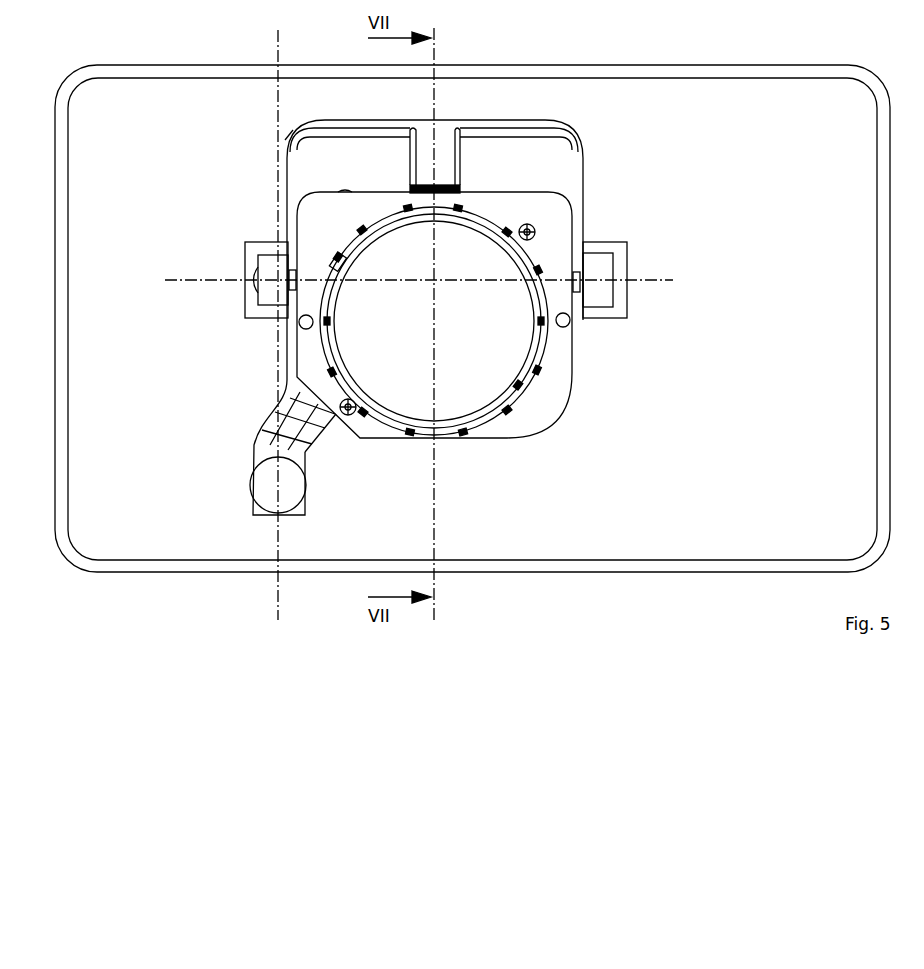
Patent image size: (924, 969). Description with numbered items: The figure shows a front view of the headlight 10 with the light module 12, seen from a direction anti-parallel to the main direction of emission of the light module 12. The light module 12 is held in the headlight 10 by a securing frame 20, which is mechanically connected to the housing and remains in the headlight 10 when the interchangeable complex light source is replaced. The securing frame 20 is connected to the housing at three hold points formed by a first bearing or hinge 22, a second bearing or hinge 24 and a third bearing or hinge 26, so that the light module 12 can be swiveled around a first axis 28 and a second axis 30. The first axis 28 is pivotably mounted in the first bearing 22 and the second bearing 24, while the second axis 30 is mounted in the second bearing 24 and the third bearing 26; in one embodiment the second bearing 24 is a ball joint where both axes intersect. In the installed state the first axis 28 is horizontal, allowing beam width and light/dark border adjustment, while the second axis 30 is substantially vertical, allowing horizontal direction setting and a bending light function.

The headlight 10 is at (777, 52).
The light module 12 is at (586, 399).
The securing frame 20 is at (523, 191).
The first bearing or hinge 22 is at (621, 235).
The second bearing or hinge 24 is at (248, 228).
The third bearing or hinge 26 is at (240, 453).
The first axis 28 is at (644, 281).
The second axis 30 is at (277, 543).